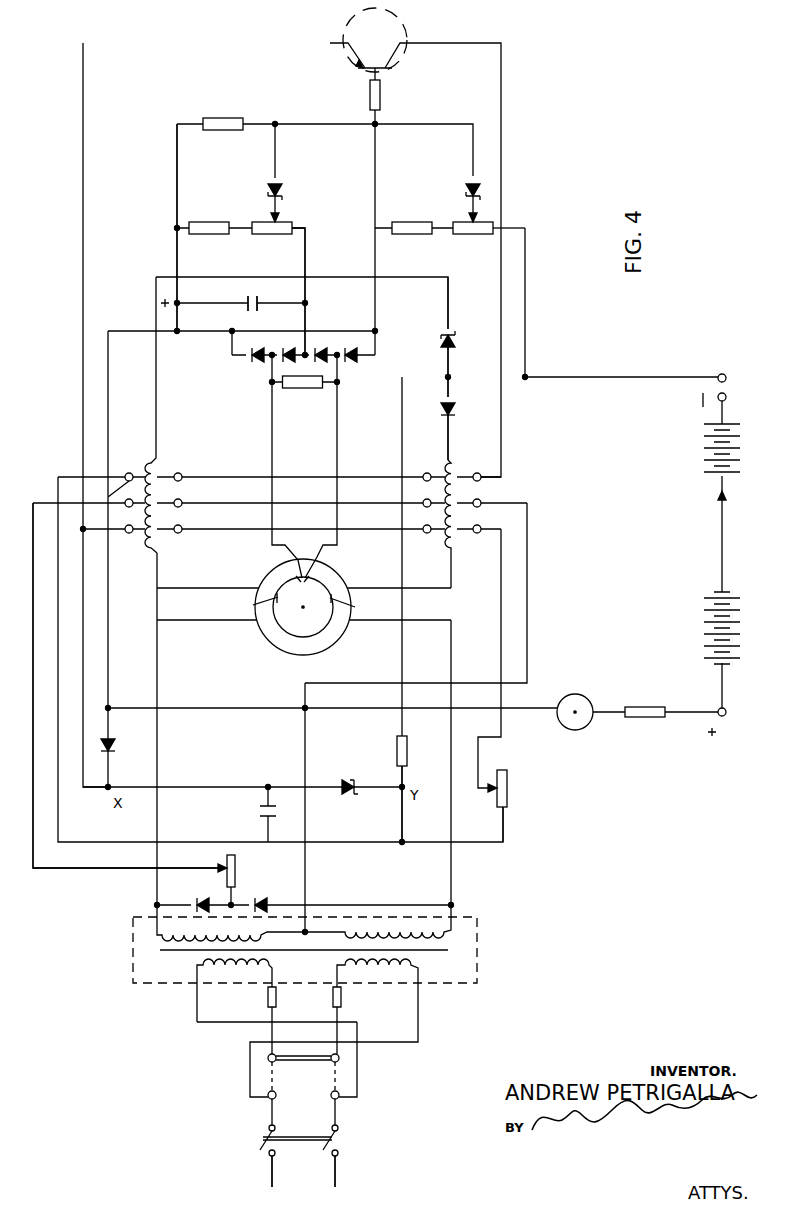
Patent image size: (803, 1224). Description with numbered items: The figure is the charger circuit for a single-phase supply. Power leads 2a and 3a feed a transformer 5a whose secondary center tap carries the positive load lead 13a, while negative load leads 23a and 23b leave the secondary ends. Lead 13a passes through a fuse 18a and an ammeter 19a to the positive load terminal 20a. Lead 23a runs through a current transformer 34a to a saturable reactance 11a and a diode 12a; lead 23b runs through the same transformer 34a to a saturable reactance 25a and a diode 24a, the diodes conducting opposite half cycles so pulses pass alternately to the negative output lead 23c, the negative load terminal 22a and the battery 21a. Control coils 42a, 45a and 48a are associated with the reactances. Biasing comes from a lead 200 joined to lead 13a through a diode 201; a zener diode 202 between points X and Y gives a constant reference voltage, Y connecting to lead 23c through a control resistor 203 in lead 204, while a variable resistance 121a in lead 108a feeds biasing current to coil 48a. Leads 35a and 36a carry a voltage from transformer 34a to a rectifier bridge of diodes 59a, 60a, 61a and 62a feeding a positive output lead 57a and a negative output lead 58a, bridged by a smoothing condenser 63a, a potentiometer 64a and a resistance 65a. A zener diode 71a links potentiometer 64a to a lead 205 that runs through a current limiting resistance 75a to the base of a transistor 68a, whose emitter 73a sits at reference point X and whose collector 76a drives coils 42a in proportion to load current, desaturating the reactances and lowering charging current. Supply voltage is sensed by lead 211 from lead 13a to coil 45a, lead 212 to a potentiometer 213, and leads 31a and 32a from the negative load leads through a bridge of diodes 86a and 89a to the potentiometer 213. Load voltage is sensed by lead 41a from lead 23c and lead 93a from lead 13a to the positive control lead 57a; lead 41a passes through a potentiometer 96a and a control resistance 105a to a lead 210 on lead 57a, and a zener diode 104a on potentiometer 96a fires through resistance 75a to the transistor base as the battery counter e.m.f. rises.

The collector 76a is at (375, 40).
The emitter 73a is at (356, 52).
The transistor 68a is at (404, 50).
The current limiting resistance 75a is at (381, 95).
The lead 205 is at (300, 124).
The positive output lead 57a is at (177, 184).
The resistance 65a is at (217, 222).
The potentiometer 64a is at (252, 222).
The zener diode 71a is at (284, 180).
The negative output lead 58a is at (305, 243).
The smoothing condenser 63a is at (252, 297).
The control resistance 105a is at (403, 222).
The zener diode 104a is at (463, 187).
The potentiometer 96a is at (490, 220).
The lead 41a is at (525, 270).
The lead 210 is at (375, 310).
The diode 12a is at (455, 344).
The diode 24a is at (458, 412).
The saturable reactance 25a is at (445, 473).
The lead 36a is at (337, 435).
The diode 61a is at (322, 347).
The diode 60a is at (350, 347).
The diode 59a is at (252, 363).
The lead 35a is at (272, 437).
The diode 62a is at (300, 388).
The reactance control coil 45a is at (110, 477).
The reactance control coil 42a is at (136, 476).
The saturable reactance 11a is at (160, 460).
The reactance control coil 48a is at (147, 545).
The current transformer 34a is at (266, 584).
The negative load lead 23a is at (157, 673).
The voltage control lead 93a is at (256, 708).
The lead 200 is at (83, 670).
The diode 201 is at (100, 742).
The lead 212 is at (33, 590).
The diode 89a is at (198, 897).
The potentiometer 213 is at (236, 880).
The diode 86a is at (263, 900).
The lead 32a is at (172, 900).
The positive load lead 13a is at (308, 890).
The lead 31a is at (377, 905).
The transformer 5a is at (458, 983).
The A.C. power lead 3a is at (272, 1175).
The A.C. power lead 2a is at (335, 1178).
The lead 204 is at (405, 667).
The negative load lead 23b is at (453, 667).
The lead 108a is at (501, 605).
The lead 211 is at (528, 604).
The ammeter 19a is at (577, 694).
The zener diode 202 is at (350, 780).
The control resistor 203 is at (397, 753).
The variable resistance 121a is at (512, 788).
The fuse 18a is at (643, 706).
The battery 21a is at (738, 642).
The positive load terminal 20a is at (727, 716).
The negative output load lead 23c is at (630, 377).
The negative load terminal 22a is at (724, 374).